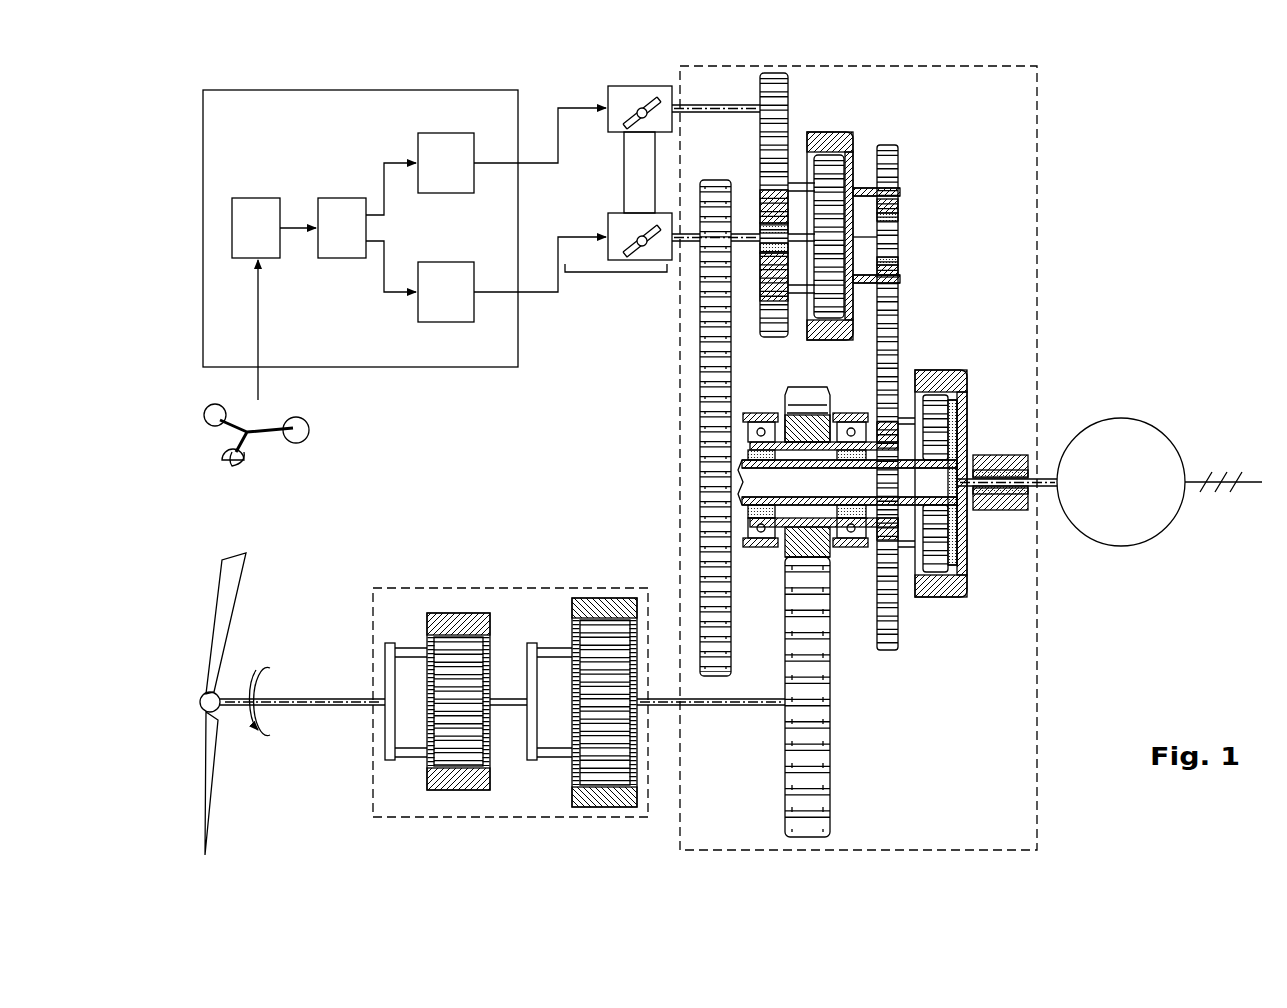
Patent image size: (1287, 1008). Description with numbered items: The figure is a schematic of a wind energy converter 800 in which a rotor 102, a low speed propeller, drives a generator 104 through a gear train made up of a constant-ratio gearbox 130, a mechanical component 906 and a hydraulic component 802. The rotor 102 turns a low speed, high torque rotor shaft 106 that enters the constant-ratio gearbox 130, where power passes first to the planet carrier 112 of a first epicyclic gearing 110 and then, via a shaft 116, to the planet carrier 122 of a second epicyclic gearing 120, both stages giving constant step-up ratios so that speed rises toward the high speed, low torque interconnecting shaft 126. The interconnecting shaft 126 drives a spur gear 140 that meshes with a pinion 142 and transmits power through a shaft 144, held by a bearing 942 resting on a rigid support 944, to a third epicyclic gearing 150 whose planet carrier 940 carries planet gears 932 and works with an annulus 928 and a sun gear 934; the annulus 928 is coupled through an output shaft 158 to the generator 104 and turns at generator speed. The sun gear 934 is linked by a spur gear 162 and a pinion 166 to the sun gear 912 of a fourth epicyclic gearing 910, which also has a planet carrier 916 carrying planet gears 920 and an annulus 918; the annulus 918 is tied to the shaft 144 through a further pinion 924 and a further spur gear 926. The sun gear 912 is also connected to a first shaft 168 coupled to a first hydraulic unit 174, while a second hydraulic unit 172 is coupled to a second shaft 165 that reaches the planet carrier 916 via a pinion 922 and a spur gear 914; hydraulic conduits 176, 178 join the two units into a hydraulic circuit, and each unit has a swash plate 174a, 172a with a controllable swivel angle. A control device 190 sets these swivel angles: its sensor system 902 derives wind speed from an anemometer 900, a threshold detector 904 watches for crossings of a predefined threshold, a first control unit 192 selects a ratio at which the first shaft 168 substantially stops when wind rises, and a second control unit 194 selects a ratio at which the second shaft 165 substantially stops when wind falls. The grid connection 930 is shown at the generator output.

The rotor 102 is at (225, 640).
The generator 104 is at (1122, 432).
The rotor shaft 106 is at (324, 698).
The first epicyclic gearing 110 is at (453, 612).
The planet carrier 112 is at (428, 645).
The shaft 116 is at (509, 708).
The second epicyclic gearing 120 is at (605, 597).
The planet carrier 122 is at (575, 640).
The interconnecting shaft 126 is at (735, 705).
The constant-ratio gearbox 130 is at (373, 790).
The spur gear 140 is at (838, 612).
The pinion 142 is at (818, 565).
The shaft 144 is at (770, 528).
The third epicyclic gearing 150 is at (935, 603).
The output shaft 158 is at (1045, 488).
The spur gear 162 is at (700, 437).
The second shaft 165 is at (712, 108).
The pinion 166 is at (698, 280).
The first shaft 168 is at (687, 232).
The second hydraulic unit 172 is at (610, 108).
The swash plate 172a is at (627, 104).
The first hydraulic unit 174 is at (610, 235).
The swash plate 174a is at (627, 232).
The hydraulic conduit 176 is at (624, 170).
The hydraulic conduit 178 is at (655, 155).
The control device 190 is at (404, 256).
The first control unit 192 is at (444, 302).
The second control unit 194 is at (445, 150).
The wind energy converter 800 is at (1130, 176).
The hydraulic component 802 is at (622, 273).
The anemometer 900 is at (278, 440).
The sensor system 902 is at (256, 212).
The threshold detector 904 is at (342, 212).
The mechanical component 906 is at (1040, 645).
The fourth epicyclic gearing 910 is at (853, 126).
The sun gear 912 is at (860, 237).
The spur gear 914 is at (775, 337).
The planet carrier 916 is at (798, 185).
The annulus 918 is at (825, 237).
The planet gears 920 is at (858, 156).
The pinion 922 is at (778, 104).
The further pinion 924 is at (900, 168).
The further spur gear 926 is at (888, 628).
The annulus 928 is at (964, 461).
The grid connection 930 is at (1228, 458).
The planet gears 932 is at (945, 412).
The sun gear 934 is at (953, 455).
The planet carrier 940 is at (905, 418).
The bearing 942 is at (900, 205).
The rigid support 944 is at (895, 262).